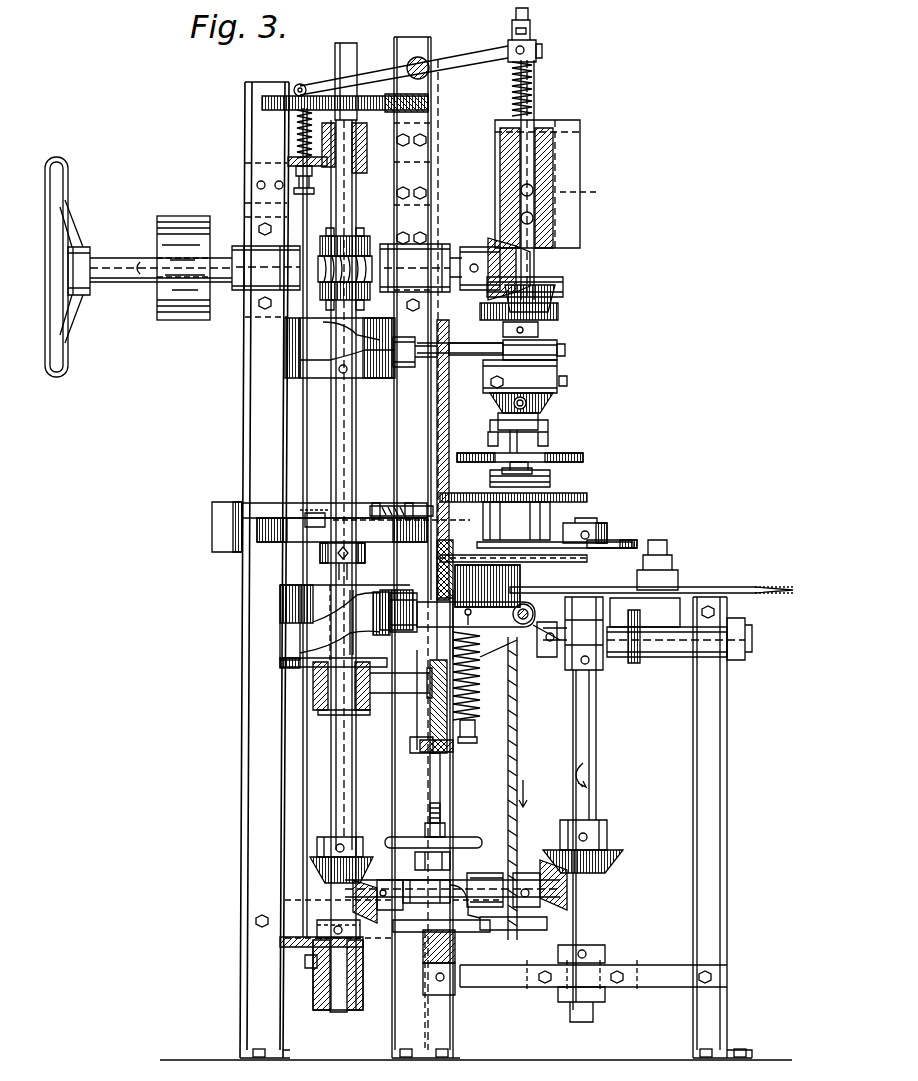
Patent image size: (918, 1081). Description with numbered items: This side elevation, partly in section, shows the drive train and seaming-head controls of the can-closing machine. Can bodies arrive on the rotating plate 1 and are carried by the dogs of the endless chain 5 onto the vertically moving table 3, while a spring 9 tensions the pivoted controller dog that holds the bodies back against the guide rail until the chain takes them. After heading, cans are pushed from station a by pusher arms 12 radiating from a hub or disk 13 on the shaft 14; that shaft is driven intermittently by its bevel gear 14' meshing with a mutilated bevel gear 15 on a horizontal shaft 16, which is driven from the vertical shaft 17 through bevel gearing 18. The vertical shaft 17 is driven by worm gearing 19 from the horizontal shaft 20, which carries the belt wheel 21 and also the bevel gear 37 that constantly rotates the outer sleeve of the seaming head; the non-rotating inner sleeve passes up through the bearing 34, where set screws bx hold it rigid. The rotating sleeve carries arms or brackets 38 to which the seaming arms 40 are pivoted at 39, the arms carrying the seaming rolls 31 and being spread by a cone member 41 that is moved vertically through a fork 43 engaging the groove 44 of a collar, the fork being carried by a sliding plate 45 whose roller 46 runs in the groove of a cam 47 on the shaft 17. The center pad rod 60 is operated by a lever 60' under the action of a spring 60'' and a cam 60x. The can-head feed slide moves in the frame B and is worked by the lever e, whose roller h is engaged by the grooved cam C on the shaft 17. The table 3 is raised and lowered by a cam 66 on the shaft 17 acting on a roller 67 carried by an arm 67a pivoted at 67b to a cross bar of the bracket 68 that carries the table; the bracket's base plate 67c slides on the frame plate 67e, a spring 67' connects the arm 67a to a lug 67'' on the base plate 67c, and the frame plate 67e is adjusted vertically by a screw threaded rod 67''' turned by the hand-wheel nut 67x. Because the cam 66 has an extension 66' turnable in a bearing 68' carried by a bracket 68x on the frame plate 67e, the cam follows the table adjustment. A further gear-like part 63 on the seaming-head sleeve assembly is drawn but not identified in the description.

The rotating plate 1 is at (768, 588).
The vertically moving table 3 is at (625, 562).
The endless chain 5 is at (520, 738).
The spring 9 is at (222, 510).
The pusher arms 12 is at (626, 542).
The hub or disk 13 is at (605, 523).
The shaft 14 is at (599, 846).
The bevel gear 14' is at (606, 850).
The mutilated bevel gear 15 is at (580, 920).
The horizontal shaft 16 is at (458, 912).
The vertical shaft 17 is at (331, 768).
The bevel gearing 18 is at (357, 858).
The worm gearing 19 is at (322, 240).
The horizontal shaft 20 is at (128, 262).
The belt wheel 21 is at (180, 220).
The seaming rolls 31 is at (535, 476).
The bearing 34 is at (500, 203).
The bevel gear 37 is at (490, 240).
The arms or brackets 38 is at (540, 425).
The pivot 39 is at (490, 447).
The seaming arms 40 is at (525, 452).
The cone member 41 is at (548, 402).
The fork 43 is at (562, 352).
The groove 44 is at (525, 376).
The sliding plate 45 is at (437, 418).
The roller 46 is at (385, 370).
The cam 47 is at (327, 352).
The rod 60 is at (540, 60).
The lever 60' is at (401, 48).
The cam 60x is at (432, 92).
The spring 60'' is at (282, 152).
The gear 63 is at (558, 314).
The cam 66 is at (298, 627).
The extension 66' is at (283, 690).
The roller 67 is at (387, 596).
The arm 67a is at (488, 629).
The pivot 67b is at (590, 655).
The base plate 67c is at (440, 588).
The frame plate 67e is at (428, 752).
The spring 67' is at (506, 676).
The lug 67'' is at (484, 753).
The screw threaded rod 67''' is at (474, 806).
The nut 67x is at (446, 830).
The bracket 68 is at (487, 586).
The bearing 68' is at (306, 715).
The bracket 68x is at (430, 747).
The station a is at (536, 532).
The set screws bx is at (594, 197).
The plate or frame B is at (580, 494).
The grooved cam C is at (318, 528).
The lever e is at (366, 508).
The roller h is at (322, 512).